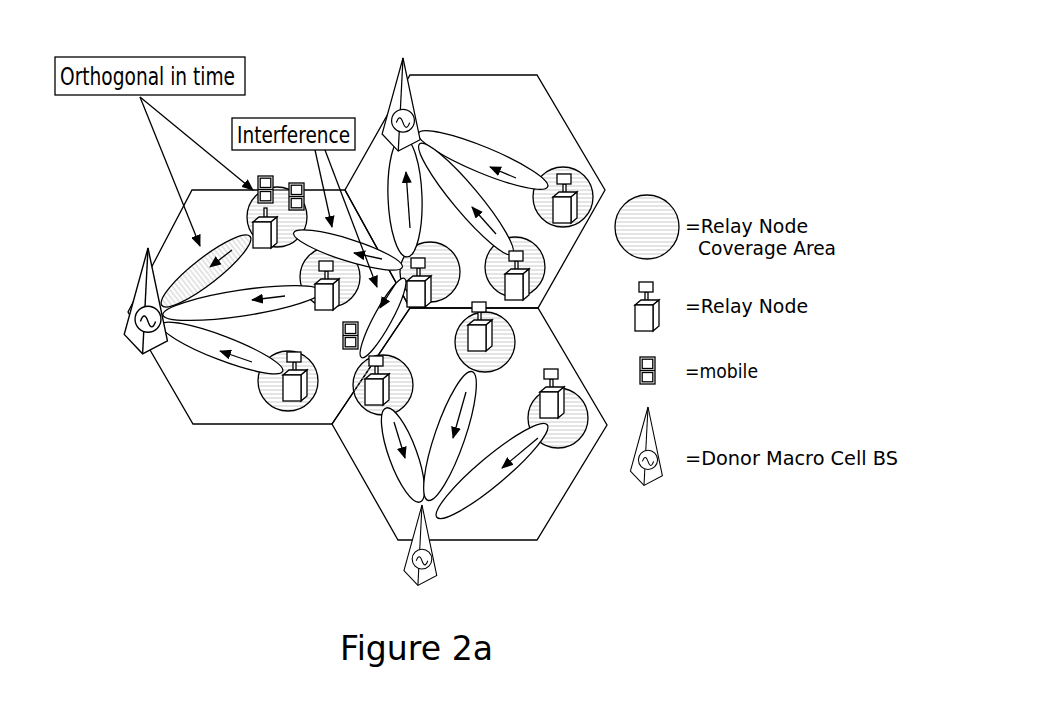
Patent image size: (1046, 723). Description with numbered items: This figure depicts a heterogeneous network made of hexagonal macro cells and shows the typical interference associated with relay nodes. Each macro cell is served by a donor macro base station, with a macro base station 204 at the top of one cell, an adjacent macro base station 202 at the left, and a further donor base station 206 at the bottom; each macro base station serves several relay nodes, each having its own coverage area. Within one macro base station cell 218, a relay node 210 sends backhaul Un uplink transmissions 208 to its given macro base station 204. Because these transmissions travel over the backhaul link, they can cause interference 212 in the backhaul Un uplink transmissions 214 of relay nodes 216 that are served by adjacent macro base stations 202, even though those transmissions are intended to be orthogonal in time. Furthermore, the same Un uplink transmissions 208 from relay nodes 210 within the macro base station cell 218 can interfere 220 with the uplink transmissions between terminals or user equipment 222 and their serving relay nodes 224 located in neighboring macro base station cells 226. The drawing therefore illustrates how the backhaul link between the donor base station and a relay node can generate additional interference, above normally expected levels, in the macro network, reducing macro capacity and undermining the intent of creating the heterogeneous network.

The adjacent macro base station 202 is at (148, 248).
The macro base station 204 is at (403, 58).
The donor macro cell base station 206 is at (440, 563).
The Un uplink transmissions 208 is at (396, 150).
The relay node 210 is at (430, 306).
The interference 212 is at (328, 256).
The backhaul Un uplink transmissions 214 is at (188, 275).
The relay nodes 216 is at (262, 222).
The macro base station cell 218 is at (547, 92).
The interference 220 is at (333, 422).
The user equipment 222 is at (343, 328).
The serving relay nodes 224 is at (166, 356).
The neighboring macro base station cells 226 is at (217, 425).